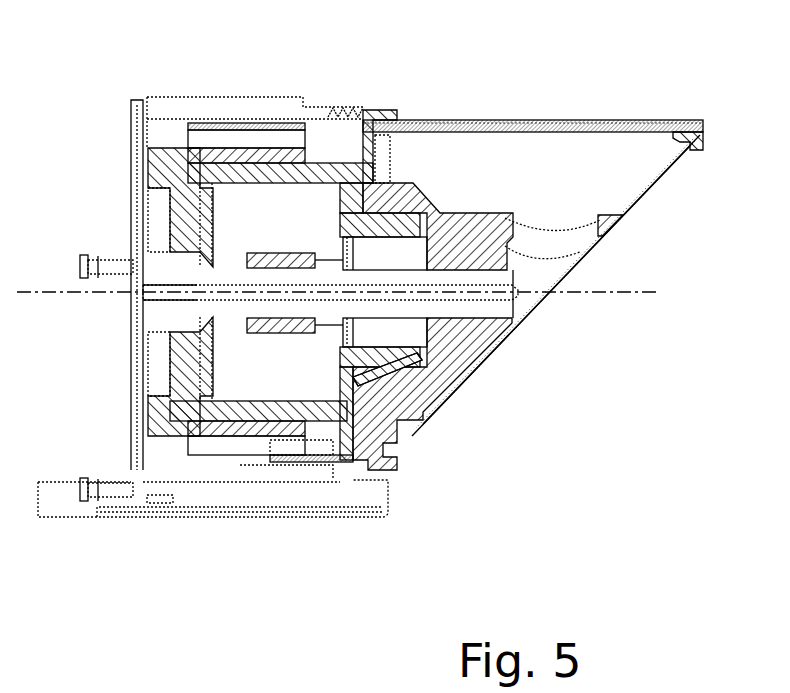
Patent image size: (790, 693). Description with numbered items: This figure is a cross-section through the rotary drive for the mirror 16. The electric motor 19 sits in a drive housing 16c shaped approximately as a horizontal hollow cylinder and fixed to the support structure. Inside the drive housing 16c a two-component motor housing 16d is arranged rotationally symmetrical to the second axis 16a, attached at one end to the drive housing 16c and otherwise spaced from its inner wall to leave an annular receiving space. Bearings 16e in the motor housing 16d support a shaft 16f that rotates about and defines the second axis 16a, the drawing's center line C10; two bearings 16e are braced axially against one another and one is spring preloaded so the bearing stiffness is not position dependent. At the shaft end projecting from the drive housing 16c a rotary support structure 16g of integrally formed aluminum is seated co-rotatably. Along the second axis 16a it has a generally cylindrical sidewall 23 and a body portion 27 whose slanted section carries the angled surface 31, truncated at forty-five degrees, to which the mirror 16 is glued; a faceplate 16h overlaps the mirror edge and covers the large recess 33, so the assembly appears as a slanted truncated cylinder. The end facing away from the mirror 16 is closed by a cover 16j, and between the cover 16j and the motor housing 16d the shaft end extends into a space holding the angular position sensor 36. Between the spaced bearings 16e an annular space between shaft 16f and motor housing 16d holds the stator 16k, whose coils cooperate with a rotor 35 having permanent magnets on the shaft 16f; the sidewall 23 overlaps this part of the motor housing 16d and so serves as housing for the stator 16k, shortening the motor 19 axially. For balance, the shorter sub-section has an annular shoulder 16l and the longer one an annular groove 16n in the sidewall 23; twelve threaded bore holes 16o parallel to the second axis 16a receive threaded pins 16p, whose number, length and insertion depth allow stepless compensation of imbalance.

The mirror 16 is at (647, 200).
The second axis 16a is at (652, 293).
The drive housing 16c is at (163, 483).
The motor housing 16d is at (183, 183).
The bearings 16e is at (397, 337).
The shaft 16f is at (447, 308).
The rotary support structure 16g is at (478, 230).
The faceplate 16h is at (633, 118).
The cover 16j is at (138, 192).
The stator 16k is at (257, 210).
The annular shoulder 16l is at (213, 445).
The annular groove 16n is at (330, 133).
The bore holes 16o is at (222, 133).
The pins 16p is at (293, 460).
The electric motor 19 is at (292, 279).
The sidewall 23 is at (302, 160).
The body portion 27 is at (491, 236).
The angled surface 31 is at (492, 350).
The recess 33 is at (563, 165).
The rotor 35 is at (290, 334).
The angular position sensor 36 is at (150, 232).
The rotation axis C10 is at (557, 293).